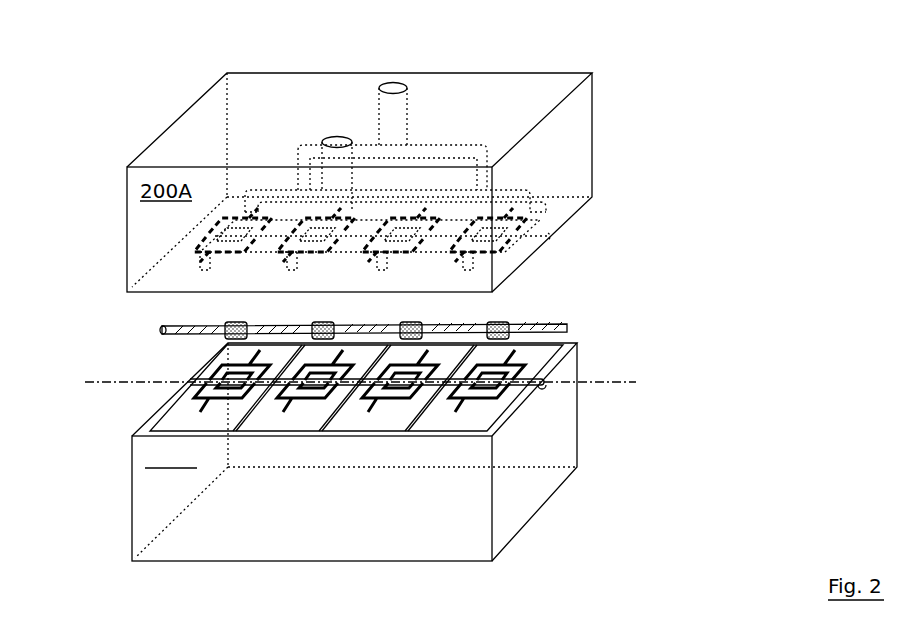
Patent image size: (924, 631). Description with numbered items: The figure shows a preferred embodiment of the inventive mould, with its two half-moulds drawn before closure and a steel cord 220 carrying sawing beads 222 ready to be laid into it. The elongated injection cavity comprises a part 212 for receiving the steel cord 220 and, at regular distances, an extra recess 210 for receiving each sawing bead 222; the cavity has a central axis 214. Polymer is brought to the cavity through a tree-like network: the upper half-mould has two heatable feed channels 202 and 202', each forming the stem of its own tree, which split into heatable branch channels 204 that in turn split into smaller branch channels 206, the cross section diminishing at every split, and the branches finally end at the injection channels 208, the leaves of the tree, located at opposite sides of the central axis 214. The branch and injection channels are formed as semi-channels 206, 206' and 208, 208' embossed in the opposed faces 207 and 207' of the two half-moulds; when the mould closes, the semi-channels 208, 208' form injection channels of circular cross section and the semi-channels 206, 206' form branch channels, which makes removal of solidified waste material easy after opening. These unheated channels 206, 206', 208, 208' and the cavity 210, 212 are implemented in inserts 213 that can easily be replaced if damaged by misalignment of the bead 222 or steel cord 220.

The feed channel 202 is at (327, 89).
The feed channel 202' is at (215, 140).
The branch channel 204 is at (468, 154).
The semi-channel 206 is at (439, 350).
The semi-channel 206' is at (440, 220).
The face 207 is at (408, 412).
The face 207' is at (407, 272).
The injection semi-channel 208 is at (448, 370).
The injection semi-channel 208' is at (439, 235).
The recess 210 is at (428, 411).
The cavity part 212 is at (309, 371).
The insert 213 is at (311, 452).
The central axis 214 is at (328, 398).
The steel cord 220 is at (322, 334).
The bead 222 is at (284, 315).